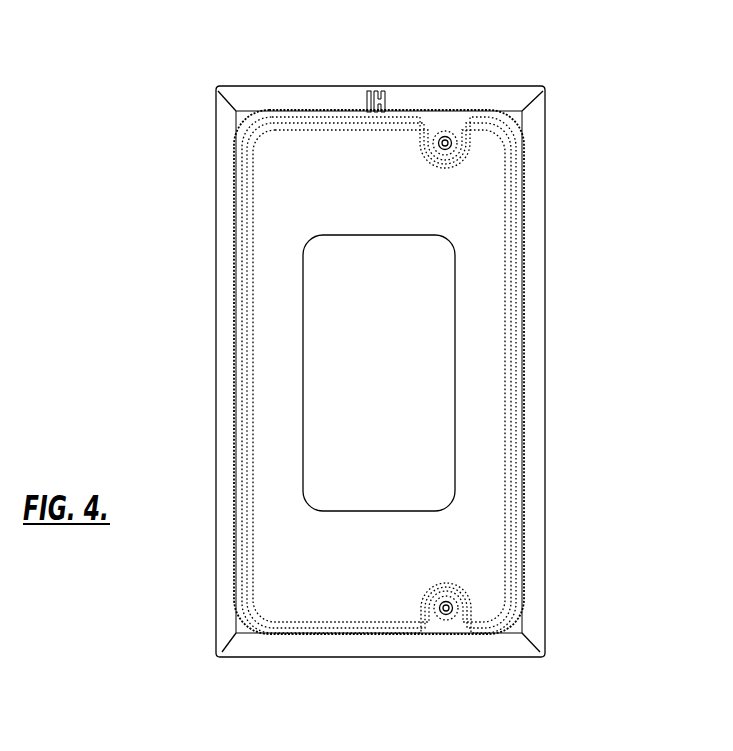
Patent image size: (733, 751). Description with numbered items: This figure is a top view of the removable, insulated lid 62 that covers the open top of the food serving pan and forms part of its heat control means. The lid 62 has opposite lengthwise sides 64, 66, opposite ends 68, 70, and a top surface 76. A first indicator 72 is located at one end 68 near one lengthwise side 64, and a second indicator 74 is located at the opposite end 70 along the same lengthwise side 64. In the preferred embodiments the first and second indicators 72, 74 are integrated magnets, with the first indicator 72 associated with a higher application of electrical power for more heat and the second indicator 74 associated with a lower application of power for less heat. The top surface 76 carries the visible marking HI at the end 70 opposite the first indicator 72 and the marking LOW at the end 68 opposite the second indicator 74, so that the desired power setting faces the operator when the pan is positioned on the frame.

The lid 62 is at (585, 160).
The lengthwise side 64 is at (545, 347).
The opposite side 66 is at (218, 363).
The end 68 is at (310, 657).
The opposite end 70 is at (410, 86).
The first indicator 72 is at (447, 612).
The second indicator 74 is at (450, 130).
The top surface 76 is at (277, 212).